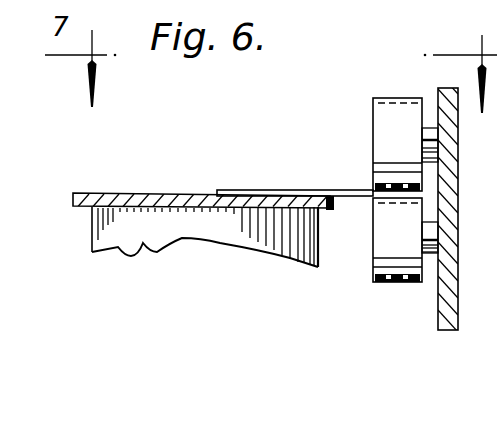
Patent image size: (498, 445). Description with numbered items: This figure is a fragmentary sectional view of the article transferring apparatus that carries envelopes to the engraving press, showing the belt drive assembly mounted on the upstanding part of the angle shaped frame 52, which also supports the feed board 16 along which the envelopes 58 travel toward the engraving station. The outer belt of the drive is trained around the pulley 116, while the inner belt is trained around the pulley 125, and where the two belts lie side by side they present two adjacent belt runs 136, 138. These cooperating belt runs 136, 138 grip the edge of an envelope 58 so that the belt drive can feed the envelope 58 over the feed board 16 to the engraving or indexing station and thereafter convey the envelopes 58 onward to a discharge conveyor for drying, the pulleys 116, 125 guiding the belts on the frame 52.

The feed board 16 is at (104, 148).
The envelopes 58 is at (280, 190).
The pulley 116 is at (388, 100).
The belt run 136 is at (386, 98).
The belt run 138 is at (375, 283).
The pulley 125 is at (402, 285).
The angle shaped frame 52 is at (447, 331).